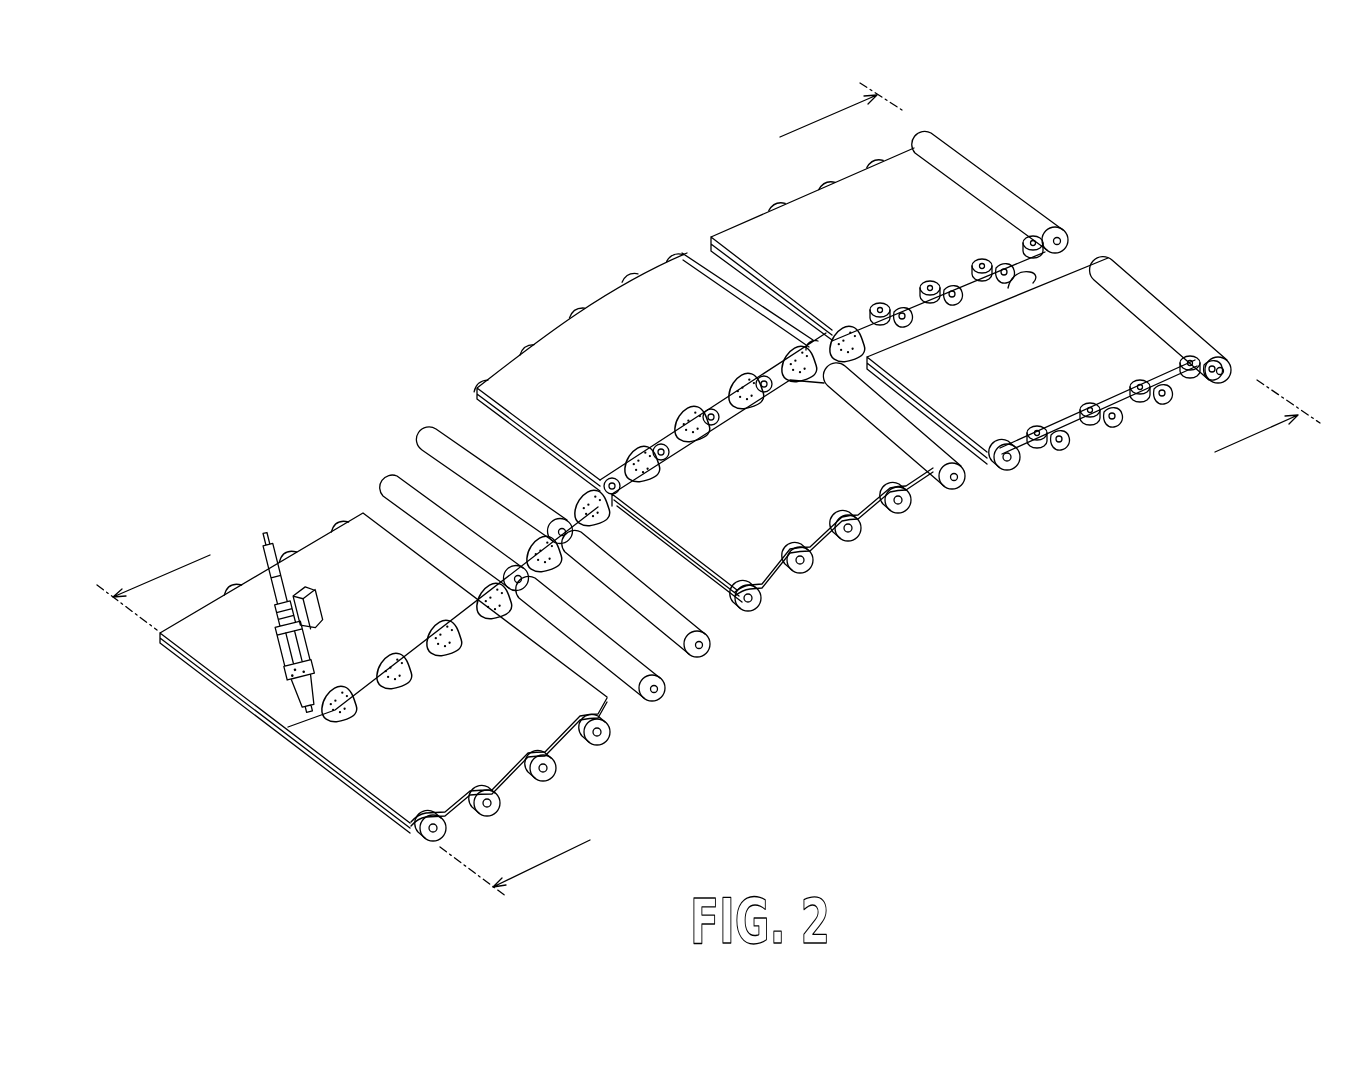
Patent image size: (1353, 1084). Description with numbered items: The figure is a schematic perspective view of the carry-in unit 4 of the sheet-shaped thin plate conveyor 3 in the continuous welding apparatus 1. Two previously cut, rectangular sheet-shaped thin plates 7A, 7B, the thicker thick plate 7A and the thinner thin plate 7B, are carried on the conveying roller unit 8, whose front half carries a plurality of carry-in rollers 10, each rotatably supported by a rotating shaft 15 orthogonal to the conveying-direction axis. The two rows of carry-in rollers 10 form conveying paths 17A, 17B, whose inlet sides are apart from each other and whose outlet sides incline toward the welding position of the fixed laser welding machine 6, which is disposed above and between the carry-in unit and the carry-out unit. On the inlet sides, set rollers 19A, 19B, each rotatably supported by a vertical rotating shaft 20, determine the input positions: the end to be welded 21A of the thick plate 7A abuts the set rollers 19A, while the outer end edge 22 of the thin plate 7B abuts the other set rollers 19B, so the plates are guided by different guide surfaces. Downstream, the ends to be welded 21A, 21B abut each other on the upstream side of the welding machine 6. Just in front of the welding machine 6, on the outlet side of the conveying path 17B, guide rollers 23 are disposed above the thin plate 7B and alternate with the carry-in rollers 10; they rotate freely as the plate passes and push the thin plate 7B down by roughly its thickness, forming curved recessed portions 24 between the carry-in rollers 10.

The continuous welding apparatus 1 is at (613, 129).
The sheet-shaped thin plate conveyor 3 is at (546, 264).
The carry-in unit 4 is at (642, 371).
The laser welding machine 6 is at (272, 565).
The sheet-shaped thin plate 7A is at (905, 172).
The sheet-shaped thin plate 7B is at (1103, 328).
The conveying roller unit 8 is at (1154, 445).
The carry-in roller 10 is at (1002, 468).
The rotating shaft 15 is at (1063, 443).
The conveying path 17A is at (160, 575).
The conveying path 17B is at (547, 860).
The set roller 19A is at (1045, 255).
The set roller 19B is at (1212, 345).
The rotating shaft 20 is at (1032, 237).
The end to be welded 21A is at (950, 280).
The end to be welded 21B is at (1017, 279).
The outer end edge 22 is at (1022, 442).
The guide roller 23 is at (335, 712).
The recessed portion 24 is at (447, 793).